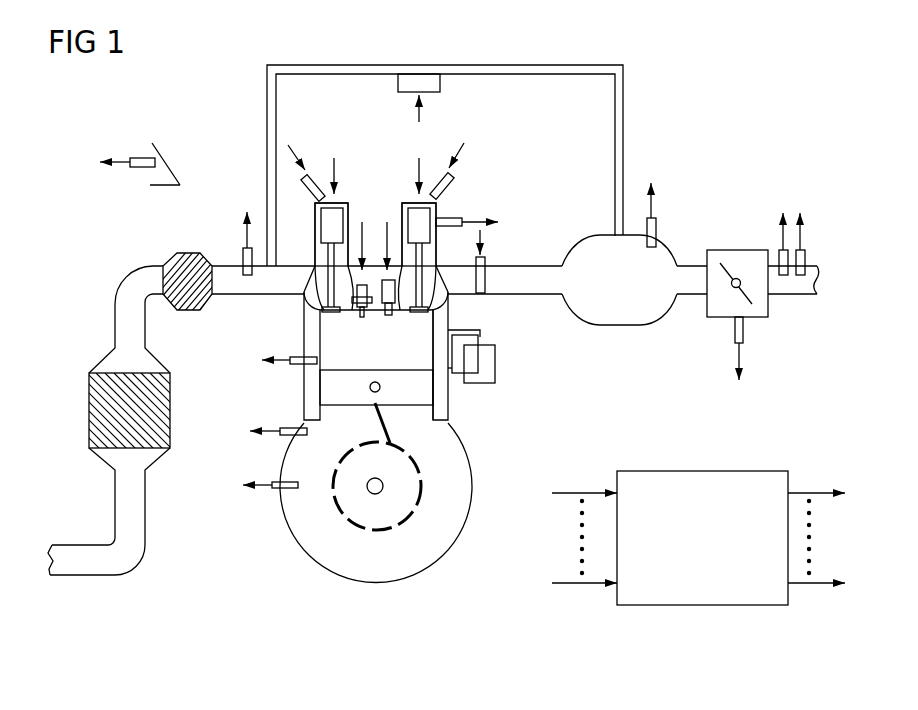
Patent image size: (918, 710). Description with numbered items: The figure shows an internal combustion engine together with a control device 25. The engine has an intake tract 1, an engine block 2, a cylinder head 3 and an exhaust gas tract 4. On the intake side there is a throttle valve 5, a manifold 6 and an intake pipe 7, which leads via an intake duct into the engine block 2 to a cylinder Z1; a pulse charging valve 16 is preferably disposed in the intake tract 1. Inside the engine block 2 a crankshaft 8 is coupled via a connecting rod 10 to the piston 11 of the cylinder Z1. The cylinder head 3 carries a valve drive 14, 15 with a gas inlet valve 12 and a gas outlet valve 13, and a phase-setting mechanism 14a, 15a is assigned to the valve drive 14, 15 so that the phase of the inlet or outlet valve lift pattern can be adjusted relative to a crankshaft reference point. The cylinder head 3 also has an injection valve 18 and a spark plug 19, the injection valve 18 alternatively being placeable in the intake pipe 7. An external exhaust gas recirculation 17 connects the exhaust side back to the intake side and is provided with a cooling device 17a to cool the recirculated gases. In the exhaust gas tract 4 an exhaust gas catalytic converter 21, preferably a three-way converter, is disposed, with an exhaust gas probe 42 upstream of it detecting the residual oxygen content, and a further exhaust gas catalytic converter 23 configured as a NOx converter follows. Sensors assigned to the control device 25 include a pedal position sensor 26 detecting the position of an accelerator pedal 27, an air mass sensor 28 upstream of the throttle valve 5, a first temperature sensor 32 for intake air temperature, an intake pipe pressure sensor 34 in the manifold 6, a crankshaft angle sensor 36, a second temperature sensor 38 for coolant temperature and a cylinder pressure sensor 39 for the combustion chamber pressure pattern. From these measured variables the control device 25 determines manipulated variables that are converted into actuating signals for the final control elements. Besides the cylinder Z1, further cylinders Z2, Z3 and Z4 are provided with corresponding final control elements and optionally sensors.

The intake tract 1 is at (651, 340).
The engine block 2 is at (270, 341).
The cylinder head 3 is at (429, 170).
The exhaust gas tract 4 is at (117, 279).
The throttle valve 5 is at (713, 249).
The manifold 6 is at (662, 311).
The intake pipe 7 is at (545, 274).
The crankshaft 8 is at (385, 485).
The connecting rod 10 is at (387, 433).
The piston 11 is at (408, 397).
The gas inlet valve 12 is at (419, 315).
The gas outlet valve 13 is at (326, 317).
The valve drive 14 is at (446, 193).
The phase-setting mechanism 14a is at (418, 213).
The valve drive 15 is at (310, 176).
The phase-setting mechanism 15a is at (339, 212).
The pulse charging valve 16 is at (485, 262).
The external exhaust gas recirculation 17 is at (623, 85).
The cooling device 17a is at (441, 86).
The injection valve 18 is at (386, 316).
The spark plug 19 is at (360, 316).
The exhaust gas catalytic converter 21 is at (183, 307).
The further exhaust gas catalytic converter 23 is at (160, 408).
The control device 25 is at (724, 474).
The pedal position sensor 26 is at (142, 158).
The accelerator pedal 27 is at (165, 165).
The air mass sensor 28 is at (779, 250).
The first temperature sensor 32 is at (805, 258).
The intake pipe pressure sensor 34 is at (656, 228).
The crankshaft angle sensor 36 is at (280, 488).
The coolant temperature sensor 38 is at (283, 435).
The cylinder pressure sensor 39 is at (294, 364).
The exhaust gas probe 42 is at (243, 258).
The cylinder Z1 is at (442, 388).
The further cylinder Z2 is at (487, 366).
The further cylinder Z3 is at (480, 340).
The further cylinder Z4 is at (481, 330).